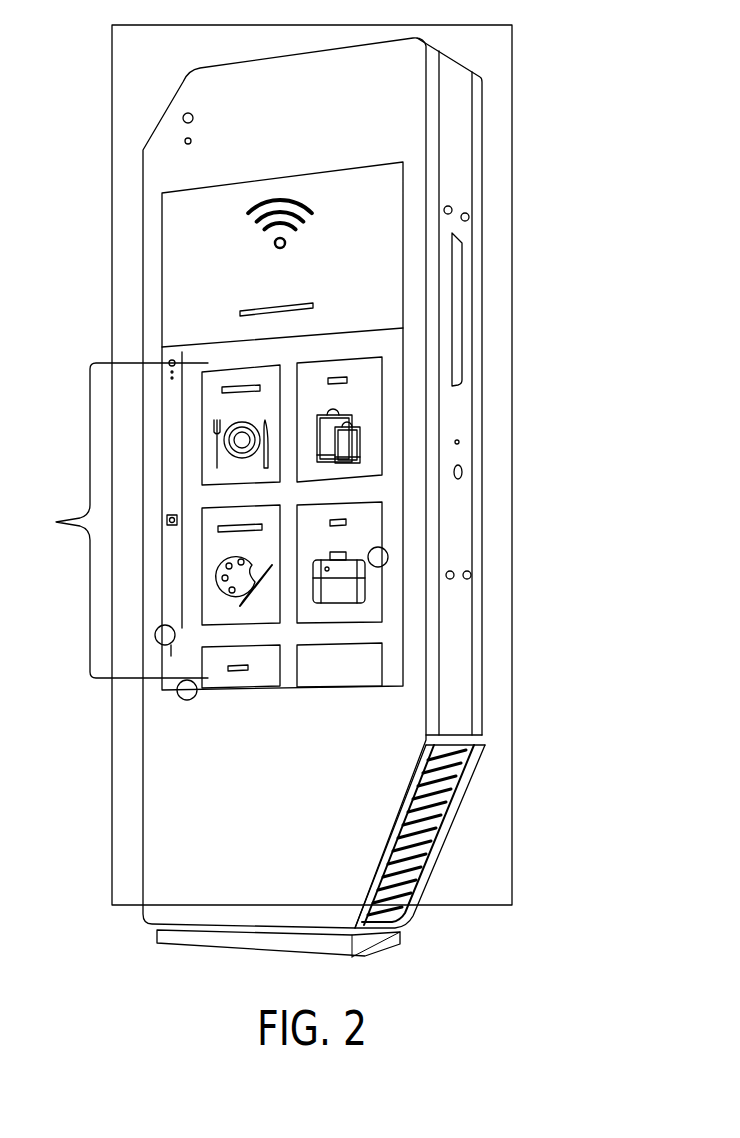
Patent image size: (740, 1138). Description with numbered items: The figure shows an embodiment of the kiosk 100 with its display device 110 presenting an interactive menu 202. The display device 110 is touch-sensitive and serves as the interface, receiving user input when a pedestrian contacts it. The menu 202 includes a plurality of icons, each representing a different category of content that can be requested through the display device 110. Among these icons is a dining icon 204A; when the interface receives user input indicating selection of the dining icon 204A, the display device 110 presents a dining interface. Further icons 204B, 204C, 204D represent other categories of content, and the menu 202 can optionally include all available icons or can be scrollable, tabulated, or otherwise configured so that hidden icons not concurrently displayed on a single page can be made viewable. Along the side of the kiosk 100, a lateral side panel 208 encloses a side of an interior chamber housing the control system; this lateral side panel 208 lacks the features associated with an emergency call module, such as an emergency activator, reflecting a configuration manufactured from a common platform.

The kiosk 100 is at (150, 110).
The display device 110 is at (393, 183).
The interactive menu 202 is at (56, 522).
The dining icon 204A is at (240, 378).
The icon 204B is at (337, 392).
The icon 204C is at (227, 597).
The icon 204D is at (342, 603).
The lateral side panel 208 is at (462, 415).